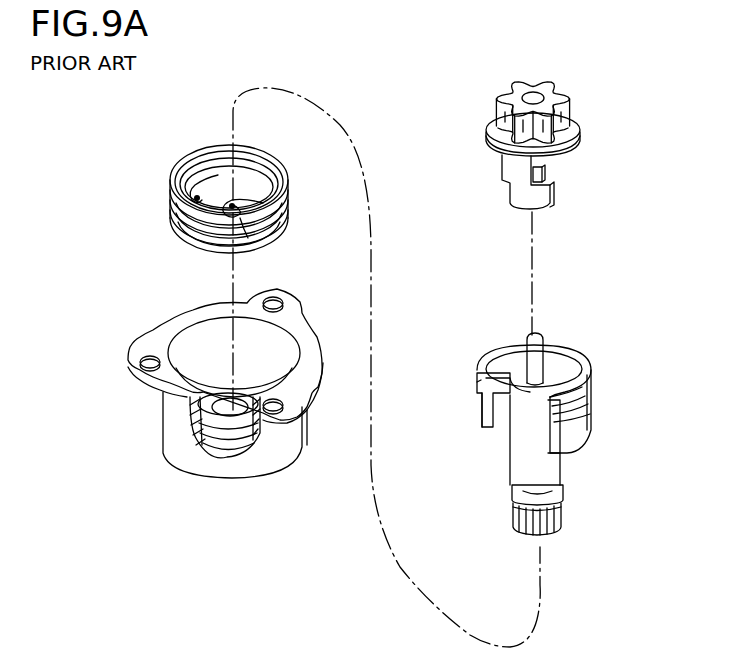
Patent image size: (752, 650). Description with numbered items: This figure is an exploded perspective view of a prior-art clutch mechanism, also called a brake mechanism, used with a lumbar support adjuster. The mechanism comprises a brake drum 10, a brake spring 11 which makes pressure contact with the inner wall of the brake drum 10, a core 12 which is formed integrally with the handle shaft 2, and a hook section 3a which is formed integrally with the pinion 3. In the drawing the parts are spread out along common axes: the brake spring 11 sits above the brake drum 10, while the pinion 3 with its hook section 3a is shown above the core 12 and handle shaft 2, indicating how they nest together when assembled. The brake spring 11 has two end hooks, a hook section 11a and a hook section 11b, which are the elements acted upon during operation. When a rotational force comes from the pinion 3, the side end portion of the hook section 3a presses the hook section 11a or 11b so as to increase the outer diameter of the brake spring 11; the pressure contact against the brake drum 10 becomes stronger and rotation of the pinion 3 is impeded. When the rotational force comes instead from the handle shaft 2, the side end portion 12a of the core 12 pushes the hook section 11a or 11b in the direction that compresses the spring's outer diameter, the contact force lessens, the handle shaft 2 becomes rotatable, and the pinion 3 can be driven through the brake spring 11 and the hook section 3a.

The handle shaft 2 is at (555, 470).
The pinion 3 is at (558, 93).
The hook section 3a is at (543, 174).
The brake drum 10 is at (176, 455).
The brake spring 11 is at (172, 181).
The hook section 11a is at (250, 196).
The hook section 11b is at (214, 175).
The core 12 is at (588, 366).
The side end portion 12a is at (548, 423).